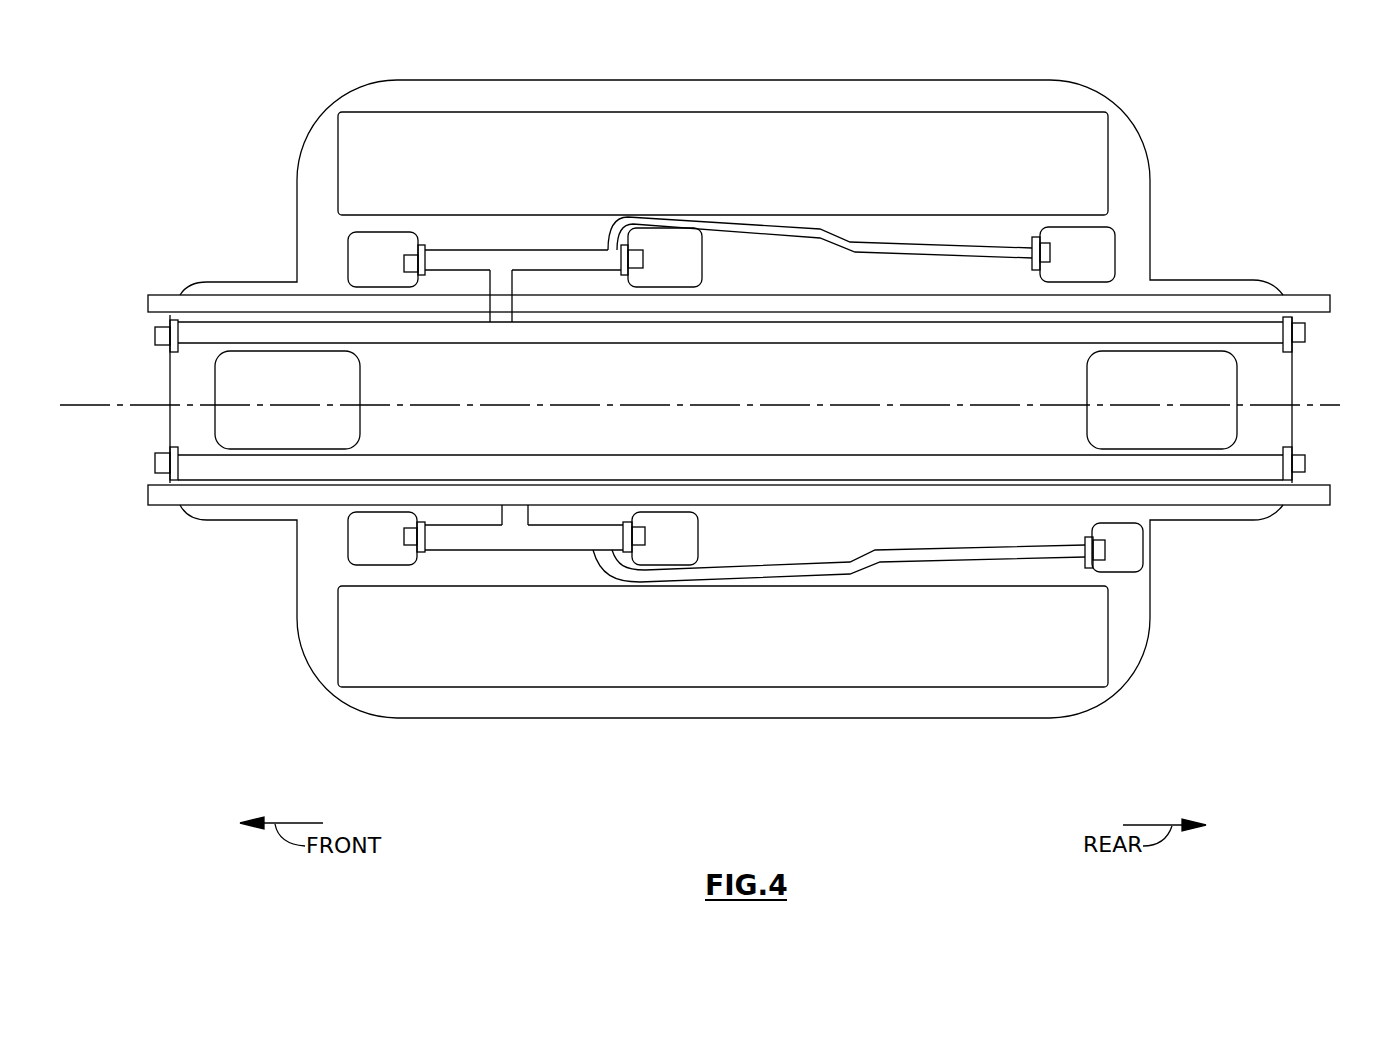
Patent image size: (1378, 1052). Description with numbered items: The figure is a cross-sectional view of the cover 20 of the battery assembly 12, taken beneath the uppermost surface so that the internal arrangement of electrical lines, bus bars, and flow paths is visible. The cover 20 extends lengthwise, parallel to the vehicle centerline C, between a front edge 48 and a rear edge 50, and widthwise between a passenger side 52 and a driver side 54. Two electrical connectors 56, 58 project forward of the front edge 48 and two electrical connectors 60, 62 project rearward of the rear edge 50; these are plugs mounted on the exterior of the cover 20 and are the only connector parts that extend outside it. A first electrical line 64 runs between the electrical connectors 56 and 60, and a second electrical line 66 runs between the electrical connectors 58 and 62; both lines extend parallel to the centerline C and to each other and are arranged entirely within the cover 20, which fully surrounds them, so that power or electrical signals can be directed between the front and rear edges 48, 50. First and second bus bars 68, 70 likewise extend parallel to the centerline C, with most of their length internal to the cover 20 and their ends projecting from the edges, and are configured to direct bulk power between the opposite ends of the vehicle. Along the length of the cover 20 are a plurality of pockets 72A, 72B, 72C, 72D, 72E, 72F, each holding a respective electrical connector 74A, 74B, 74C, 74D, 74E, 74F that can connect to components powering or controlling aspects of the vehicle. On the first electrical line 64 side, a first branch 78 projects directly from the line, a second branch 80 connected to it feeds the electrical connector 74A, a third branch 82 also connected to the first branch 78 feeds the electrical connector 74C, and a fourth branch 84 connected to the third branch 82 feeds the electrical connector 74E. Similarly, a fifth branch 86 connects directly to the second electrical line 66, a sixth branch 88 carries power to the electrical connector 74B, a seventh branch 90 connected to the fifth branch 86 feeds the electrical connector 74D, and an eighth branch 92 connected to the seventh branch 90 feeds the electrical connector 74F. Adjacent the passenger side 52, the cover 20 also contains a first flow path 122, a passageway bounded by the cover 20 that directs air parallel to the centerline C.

The battery assembly 12 is at (284, 736).
The cover 20 is at (731, 399).
The front edge 48 is at (732, 399).
The rear edge 50 is at (1292, 420).
The passenger side 52 is at (837, 78).
The driver side 54 is at (612, 718).
The electrical connector 56 is at (155, 335).
The electrical connector 58 is at (155, 462).
The electrical connector 60 is at (1305, 333).
The electrical connector 62 is at (1305, 463).
The first electrical line 64 is at (437, 330).
The second electrical line 66 is at (652, 468).
The first bus bar 68 is at (240, 300).
The second bus bar 70 is at (253, 505).
The pocket 72A is at (368, 248).
The pocket 72B is at (358, 545).
The pocket 72C is at (672, 243).
The pocket 72D is at (698, 545).
The pocket 72E is at (1100, 250).
The pocket 72F is at (1140, 550).
The electrical connector 74A is at (412, 262).
The electrical connector 74B is at (410, 548).
The electrical connector 74C is at (645, 258).
The electrical connector 74D is at (645, 540).
The electrical connector 74E is at (1055, 248).
The electrical connector 74F is at (1098, 550).
The first branch 78 is at (512, 280).
The second branch 80 is at (452, 270).
The third branch 82 is at (560, 250).
The fourth branch 84 is at (887, 245).
The fifth branch 86 is at (513, 515).
The sixth branch 88 is at (472, 535).
The seventh branch 90 is at (583, 540).
The eighth branch 92 is at (912, 558).
The first flow path 122 is at (710, 138).
The centerline C is at (118, 405).